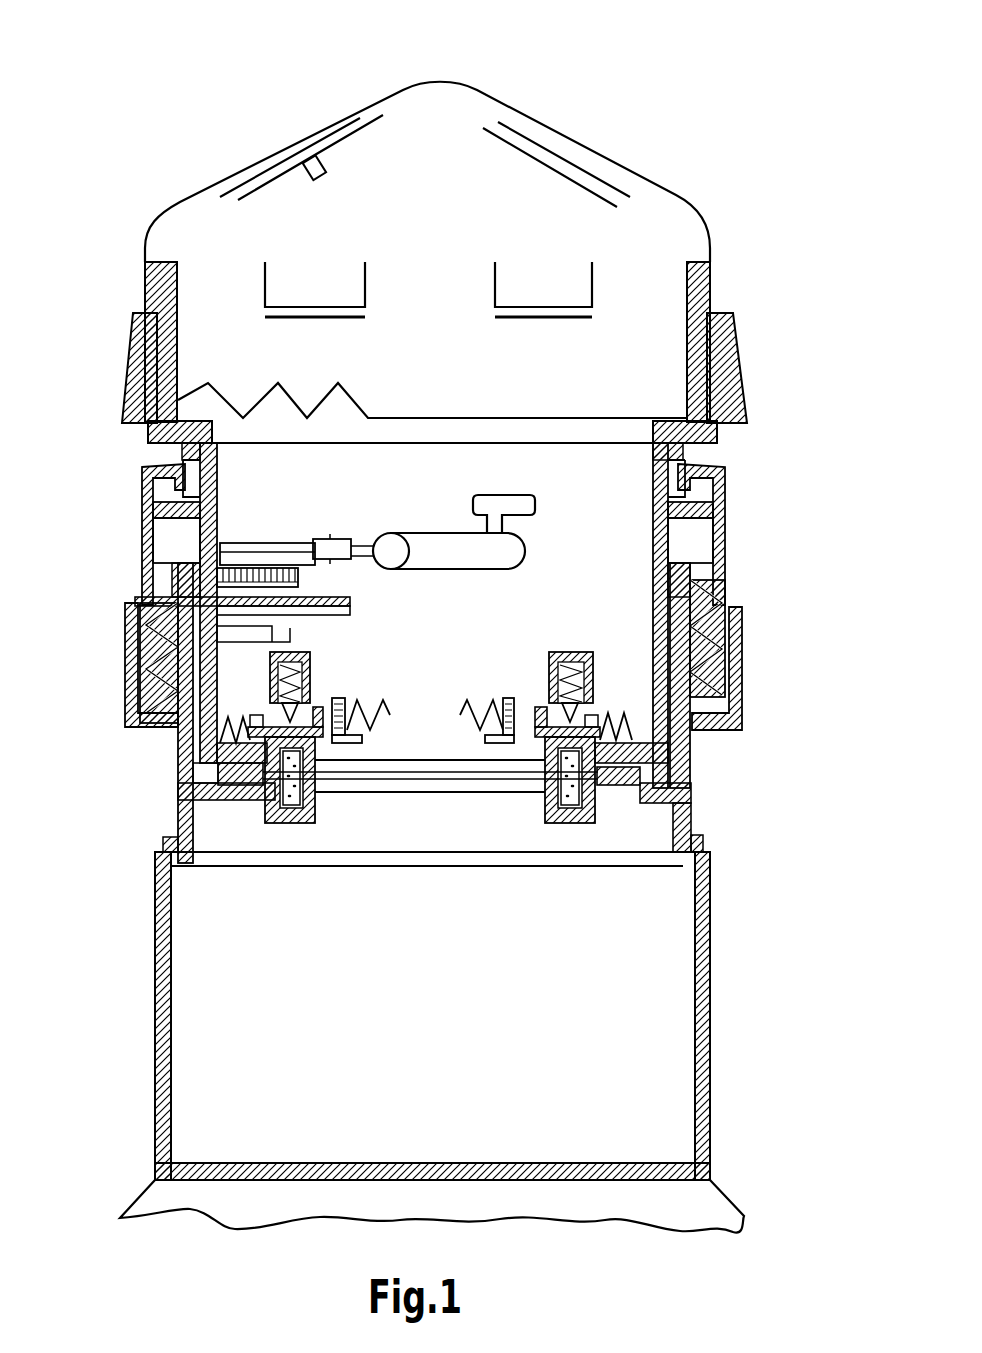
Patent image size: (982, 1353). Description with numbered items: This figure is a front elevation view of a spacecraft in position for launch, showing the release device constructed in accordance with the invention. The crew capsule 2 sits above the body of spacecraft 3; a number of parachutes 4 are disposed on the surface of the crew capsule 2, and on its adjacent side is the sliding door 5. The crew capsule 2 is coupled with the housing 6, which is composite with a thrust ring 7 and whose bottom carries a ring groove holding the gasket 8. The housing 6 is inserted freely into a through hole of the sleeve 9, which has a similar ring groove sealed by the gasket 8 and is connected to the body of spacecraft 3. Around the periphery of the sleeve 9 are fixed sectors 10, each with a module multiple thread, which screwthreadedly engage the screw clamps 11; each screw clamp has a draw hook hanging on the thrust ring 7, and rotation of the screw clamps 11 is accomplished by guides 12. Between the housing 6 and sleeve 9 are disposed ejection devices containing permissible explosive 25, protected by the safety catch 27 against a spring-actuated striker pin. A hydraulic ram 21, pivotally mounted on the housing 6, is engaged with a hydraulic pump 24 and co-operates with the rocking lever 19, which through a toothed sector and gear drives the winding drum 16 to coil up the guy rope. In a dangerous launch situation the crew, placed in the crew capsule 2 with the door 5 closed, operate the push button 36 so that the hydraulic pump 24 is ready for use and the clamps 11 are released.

The crew capsule 2 is at (655, 210).
The body of spacecraft 3 is at (713, 860).
The parachutes 4 is at (124, 388).
The sliding door 5 is at (150, 372).
The housing 6 is at (727, 518).
The thrust ring 7 is at (727, 489).
The gasket 8 is at (172, 752).
The sleeve 9 is at (692, 783).
The sectors 10 is at (140, 622).
The screw clamps 11 is at (143, 483).
The guides 12 is at (126, 667).
The winding drum 16 is at (180, 572).
The rocking lever 19 is at (272, 545).
The hydraulic ram 21 is at (455, 566).
The hydraulic pump 24 is at (528, 497).
The permissible explosive 25 is at (598, 776).
The safety catch 27 is at (308, 706).
The push button 36 is at (308, 165).